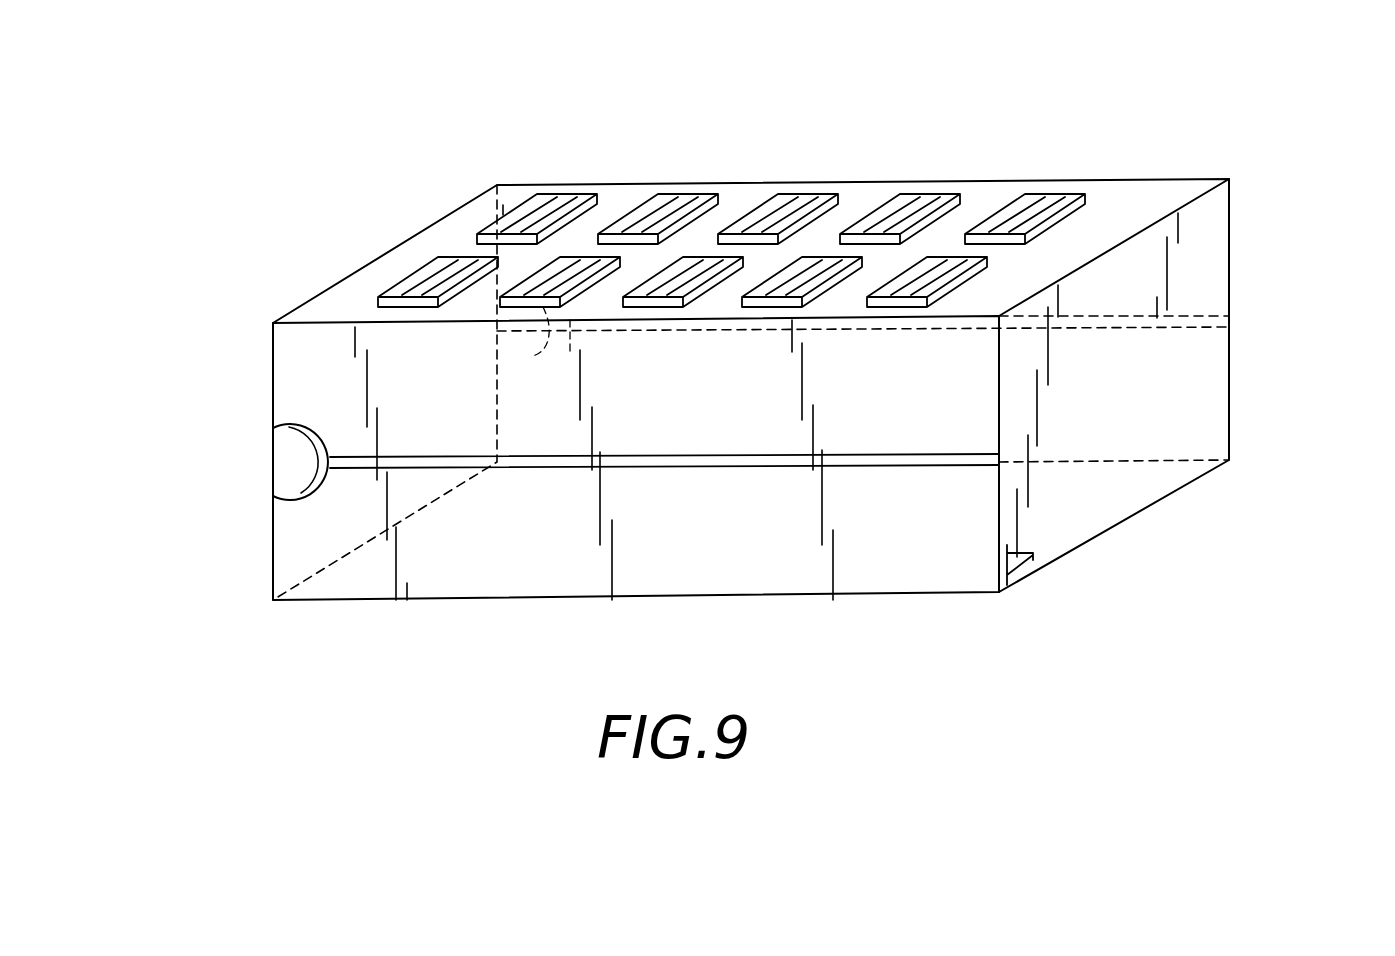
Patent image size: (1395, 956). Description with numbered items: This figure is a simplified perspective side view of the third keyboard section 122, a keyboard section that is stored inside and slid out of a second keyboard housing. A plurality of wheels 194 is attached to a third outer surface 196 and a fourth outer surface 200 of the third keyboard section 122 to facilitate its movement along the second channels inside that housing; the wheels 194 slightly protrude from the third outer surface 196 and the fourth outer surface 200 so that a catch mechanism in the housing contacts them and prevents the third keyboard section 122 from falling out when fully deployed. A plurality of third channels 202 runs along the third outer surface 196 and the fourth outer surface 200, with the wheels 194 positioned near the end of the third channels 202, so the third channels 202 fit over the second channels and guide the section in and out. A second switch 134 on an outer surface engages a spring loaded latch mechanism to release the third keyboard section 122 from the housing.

The third keyboard section 122 is at (1163, 194).
The second switch 134 is at (1033, 560).
The plurality of wheels 194 is at (285, 462).
The third outer surface 196 is at (315, 378).
The fourth outer surface 200 is at (483, 208).
The plurality of third channels 202 is at (675, 462).